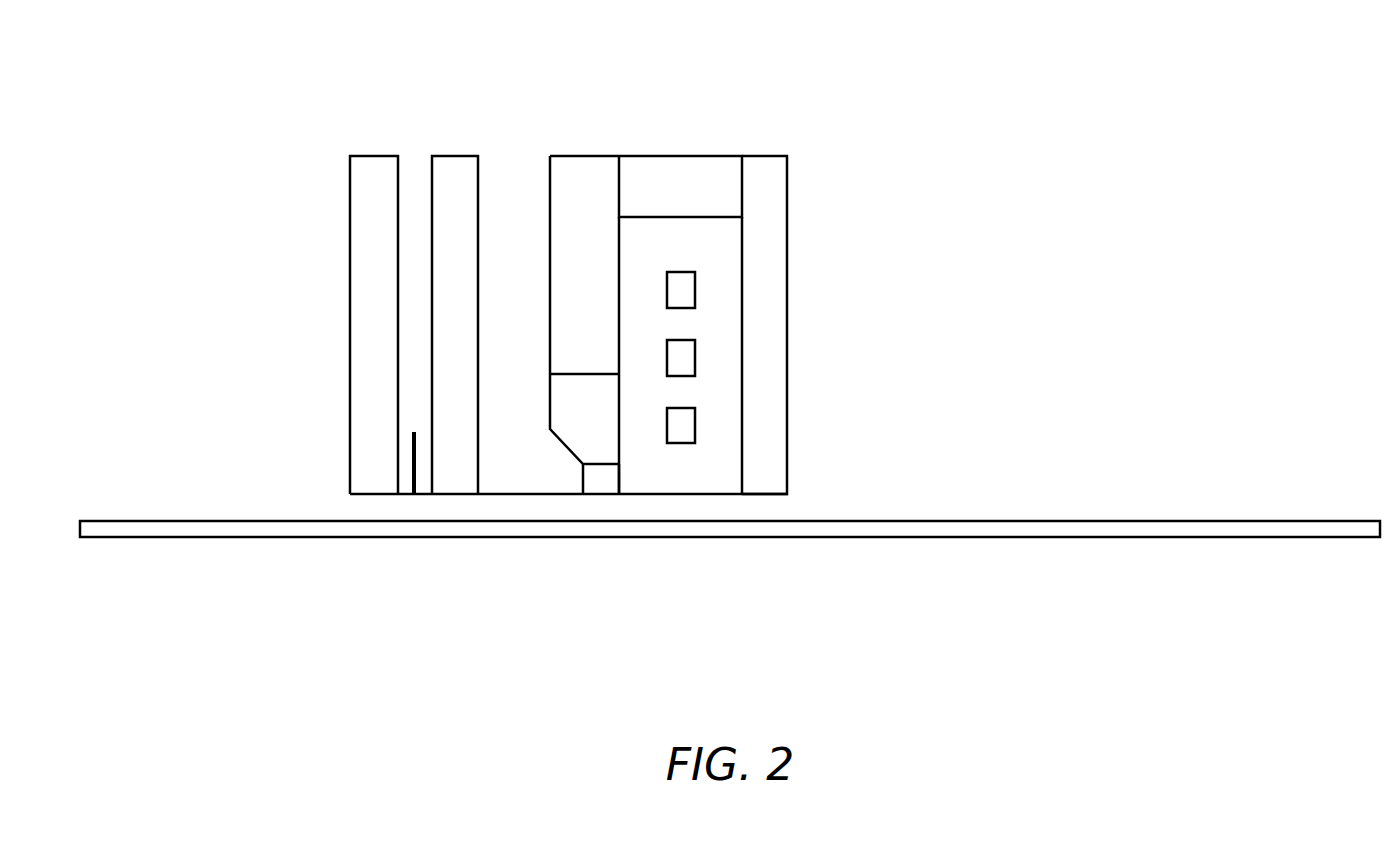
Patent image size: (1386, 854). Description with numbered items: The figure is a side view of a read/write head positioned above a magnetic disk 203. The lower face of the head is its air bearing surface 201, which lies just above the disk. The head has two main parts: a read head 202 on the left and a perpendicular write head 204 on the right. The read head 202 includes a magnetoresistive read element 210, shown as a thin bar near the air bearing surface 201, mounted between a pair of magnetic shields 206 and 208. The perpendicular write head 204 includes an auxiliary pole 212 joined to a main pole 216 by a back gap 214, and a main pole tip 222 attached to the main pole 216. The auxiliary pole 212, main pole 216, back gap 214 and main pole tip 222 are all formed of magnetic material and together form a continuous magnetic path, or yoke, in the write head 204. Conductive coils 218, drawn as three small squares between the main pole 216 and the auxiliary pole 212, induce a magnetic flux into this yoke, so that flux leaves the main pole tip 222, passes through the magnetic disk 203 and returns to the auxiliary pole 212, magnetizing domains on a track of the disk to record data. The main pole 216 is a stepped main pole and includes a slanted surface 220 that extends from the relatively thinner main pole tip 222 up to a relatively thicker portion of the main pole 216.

The air bearing surface 201 is at (512, 497).
The read head 202 is at (338, 112).
The magnetic disk 203 is at (1277, 521).
The perpendicular write head 204 is at (540, 112).
The magnetic shield 206 is at (368, 192).
The magnetic shield 208 is at (452, 257).
The magnetoresistive read element 210 is at (411, 462).
The auxiliary pole 212 is at (765, 457).
The back gap 214 is at (677, 191).
The main pole 216 is at (590, 255).
The conductive coils 218 is at (678, 290).
The slanted surface 220 is at (567, 450).
The main pole tip 222 is at (600, 482).